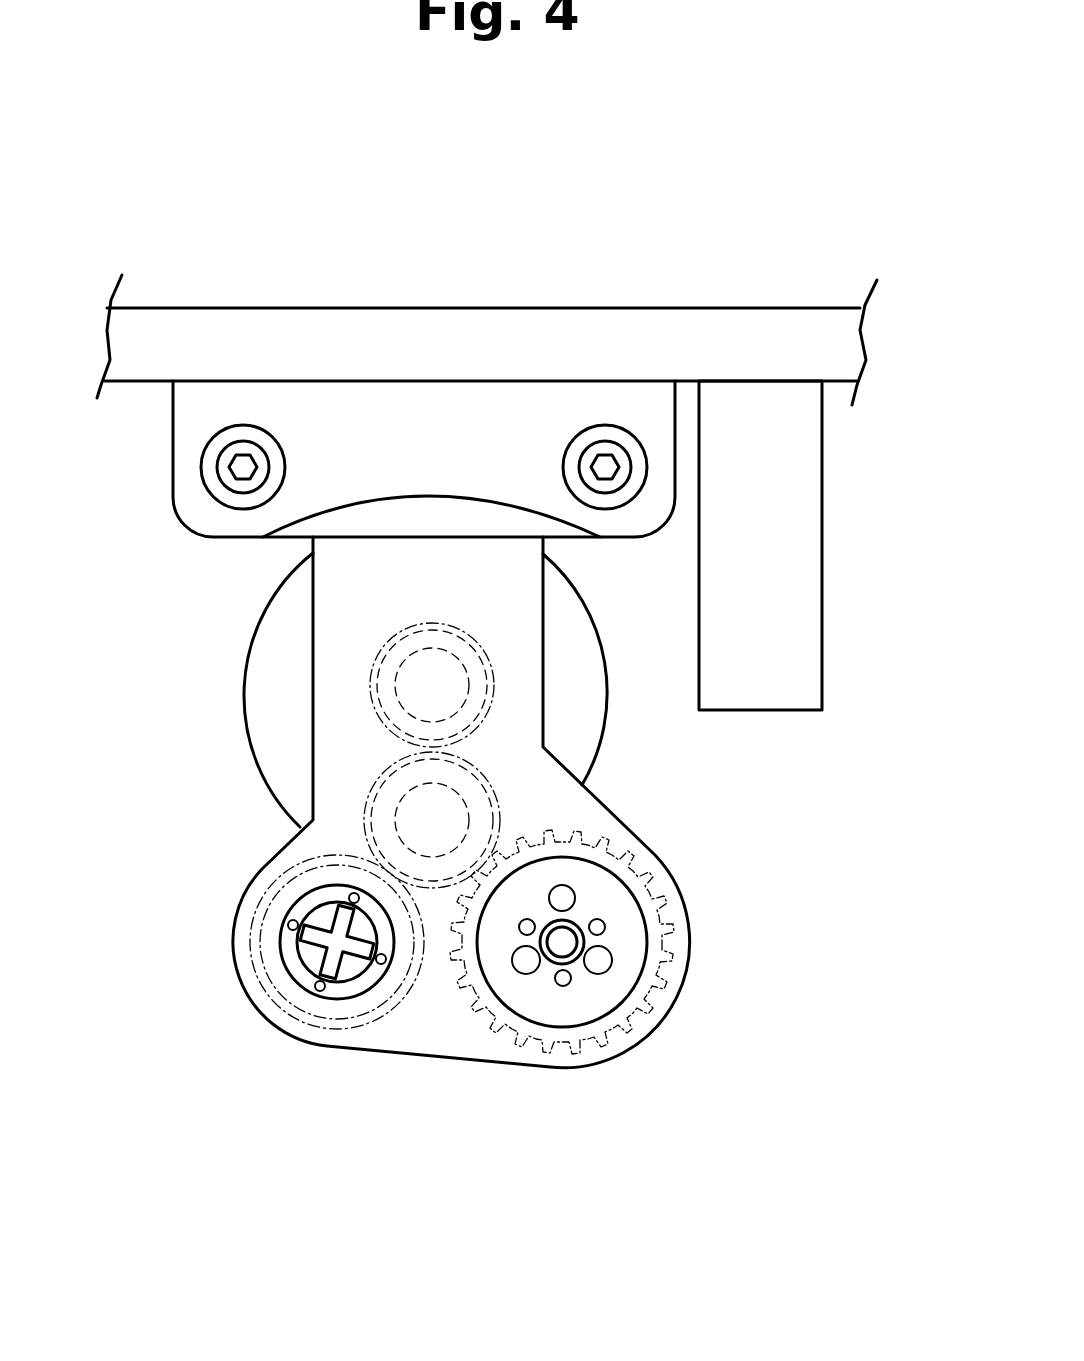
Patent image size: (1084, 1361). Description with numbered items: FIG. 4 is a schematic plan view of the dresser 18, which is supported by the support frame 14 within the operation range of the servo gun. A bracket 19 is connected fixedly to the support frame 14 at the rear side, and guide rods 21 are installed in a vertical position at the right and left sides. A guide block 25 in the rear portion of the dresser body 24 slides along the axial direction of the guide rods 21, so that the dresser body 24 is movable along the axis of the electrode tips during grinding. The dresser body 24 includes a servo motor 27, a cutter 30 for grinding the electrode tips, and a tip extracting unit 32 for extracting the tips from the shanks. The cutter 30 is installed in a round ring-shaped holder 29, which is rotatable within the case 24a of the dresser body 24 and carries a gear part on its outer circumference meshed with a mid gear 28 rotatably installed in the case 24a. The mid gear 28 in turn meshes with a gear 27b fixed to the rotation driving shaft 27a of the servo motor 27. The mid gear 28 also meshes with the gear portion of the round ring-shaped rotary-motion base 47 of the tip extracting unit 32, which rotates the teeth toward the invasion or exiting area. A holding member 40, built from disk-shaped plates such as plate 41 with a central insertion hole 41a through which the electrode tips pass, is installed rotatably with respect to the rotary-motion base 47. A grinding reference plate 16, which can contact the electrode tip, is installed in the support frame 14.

The support frame 14 is at (567, 325).
The grinding reference plate 16 is at (800, 555).
The dresser 18 is at (488, 1125).
The bracket 19 is at (358, 423).
The guide rods 21 is at (245, 467).
The dresser body 24 is at (396, 884).
The case 24a is at (277, 1025).
The guide block 25 is at (380, 523).
The servo motor 27 is at (583, 748).
The rotation driving shaft 27a is at (413, 697).
The gear 27b is at (493, 703).
The mid gear 28 is at (497, 807).
The holder 29 is at (272, 1023).
The cutter 30 is at (358, 973).
The tip extracting unit 32 is at (698, 888).
The holding member 40 is at (689, 942).
The plate 41 is at (633, 947).
The insertion hole 41a is at (560, 942).
The rotary-motion base 47 is at (667, 1000).